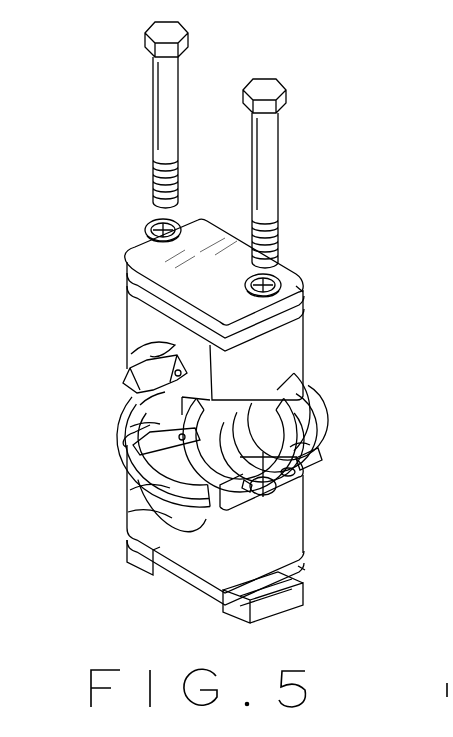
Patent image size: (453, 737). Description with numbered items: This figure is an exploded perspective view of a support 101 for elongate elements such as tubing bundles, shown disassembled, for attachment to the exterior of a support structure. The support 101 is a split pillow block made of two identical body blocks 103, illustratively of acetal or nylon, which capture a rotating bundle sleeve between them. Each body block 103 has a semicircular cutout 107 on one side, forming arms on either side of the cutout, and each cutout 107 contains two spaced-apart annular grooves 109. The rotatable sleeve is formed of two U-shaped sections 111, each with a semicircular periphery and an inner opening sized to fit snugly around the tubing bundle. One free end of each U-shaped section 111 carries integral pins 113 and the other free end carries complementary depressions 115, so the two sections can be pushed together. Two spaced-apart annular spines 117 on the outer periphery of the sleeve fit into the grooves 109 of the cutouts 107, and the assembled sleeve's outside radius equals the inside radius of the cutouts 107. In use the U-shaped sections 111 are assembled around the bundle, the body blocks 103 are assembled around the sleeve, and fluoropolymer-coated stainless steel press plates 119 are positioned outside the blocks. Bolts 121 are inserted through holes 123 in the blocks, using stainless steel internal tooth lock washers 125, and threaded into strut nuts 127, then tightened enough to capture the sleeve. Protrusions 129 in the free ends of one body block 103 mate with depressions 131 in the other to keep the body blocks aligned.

The support 101 is at (112, 247).
The body block 103 is at (302, 346).
The semicircular cutout 107 is at (130, 490).
The annular groove 109 is at (128, 512).
The U-shaped section 111 is at (120, 385).
The integral pin 113 is at (130, 427).
The complementary depression 115 is at (140, 411).
The annular spine 117 is at (301, 420).
The press plate 119 is at (301, 291).
The bolt 121 is at (278, 177).
The hole 123 is at (126, 247).
The internal tooth lock washer 125 is at (284, 280).
The strut nut 127 is at (280, 600).
The protrusion 129 is at (247, 482).
The depression 131 is at (304, 468).